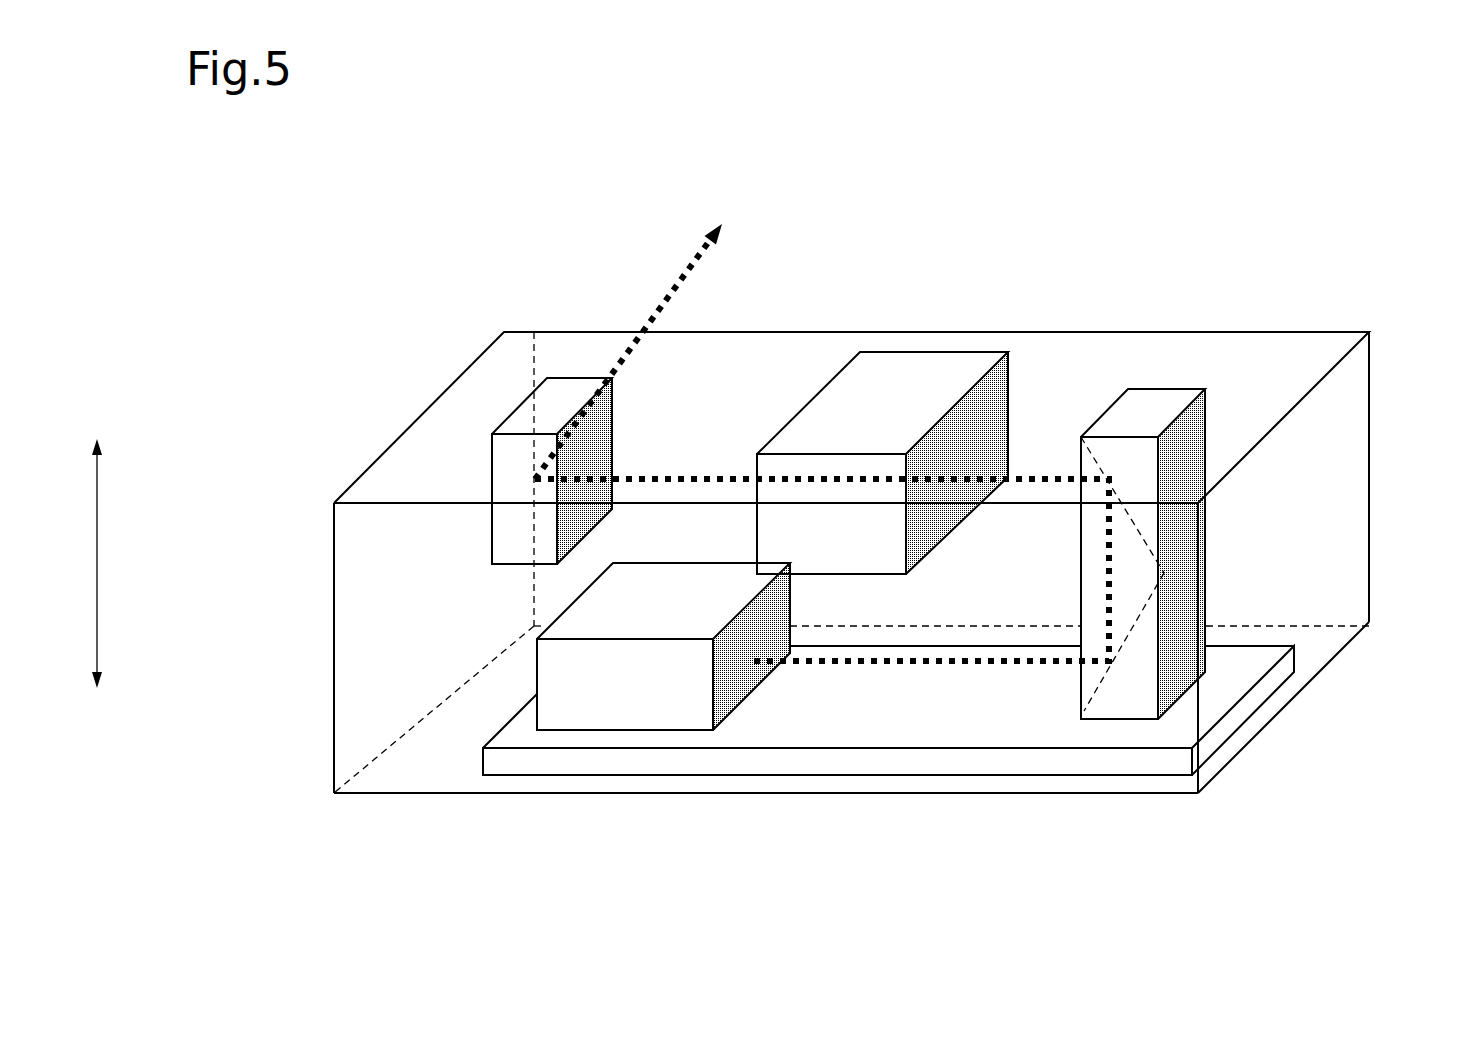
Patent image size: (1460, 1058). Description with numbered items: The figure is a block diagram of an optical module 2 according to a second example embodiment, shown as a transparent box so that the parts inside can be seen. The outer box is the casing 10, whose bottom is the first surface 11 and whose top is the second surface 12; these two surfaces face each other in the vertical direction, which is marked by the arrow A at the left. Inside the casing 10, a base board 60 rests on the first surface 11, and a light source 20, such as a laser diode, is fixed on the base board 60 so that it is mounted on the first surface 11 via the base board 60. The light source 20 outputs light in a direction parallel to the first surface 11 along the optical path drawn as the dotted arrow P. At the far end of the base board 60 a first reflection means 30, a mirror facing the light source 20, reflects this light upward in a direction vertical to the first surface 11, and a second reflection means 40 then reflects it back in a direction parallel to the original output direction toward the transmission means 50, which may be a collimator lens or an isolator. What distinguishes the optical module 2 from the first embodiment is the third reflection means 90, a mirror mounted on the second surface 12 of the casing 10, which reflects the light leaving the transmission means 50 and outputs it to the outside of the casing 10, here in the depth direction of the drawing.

The optical module 2 is at (1443, 68).
The casing 10 is at (473, 397).
The first surface 11 is at (433, 768).
The second surface 12 is at (1147, 355).
The light source 20 is at (598, 612).
The first reflection means 30 is at (1105, 680).
The second reflection means 40 is at (1164, 543).
The transmission means 50 is at (922, 367).
The base board 60 is at (805, 765).
The third reflection means 90 is at (510, 475).
The arrow P is at (890, 665).
The arrow A is at (112, 563).